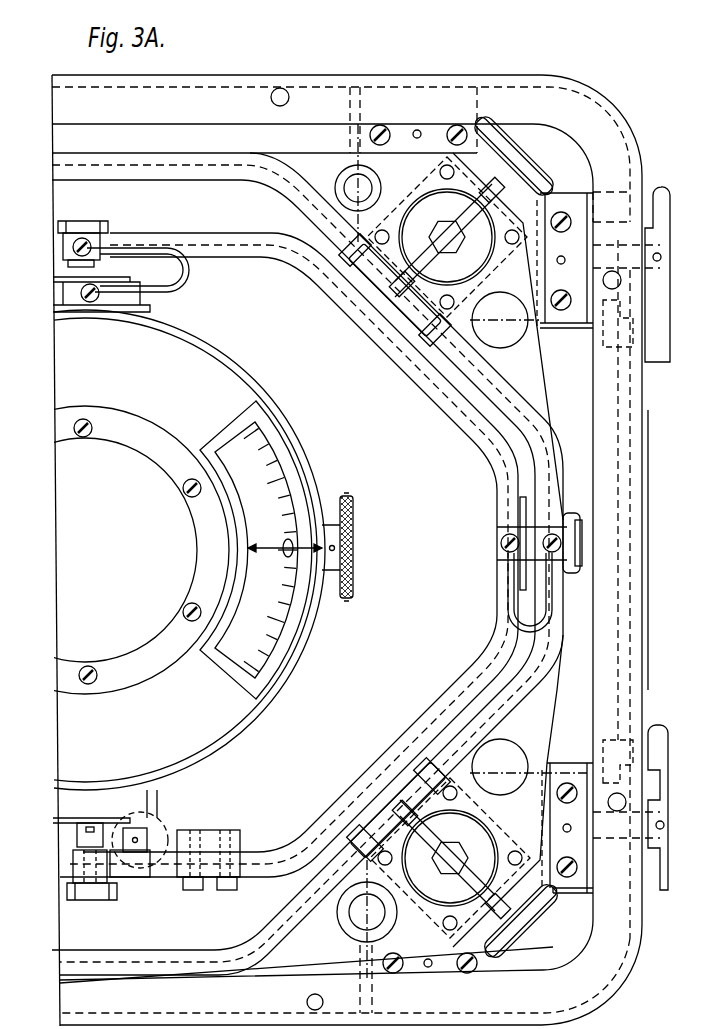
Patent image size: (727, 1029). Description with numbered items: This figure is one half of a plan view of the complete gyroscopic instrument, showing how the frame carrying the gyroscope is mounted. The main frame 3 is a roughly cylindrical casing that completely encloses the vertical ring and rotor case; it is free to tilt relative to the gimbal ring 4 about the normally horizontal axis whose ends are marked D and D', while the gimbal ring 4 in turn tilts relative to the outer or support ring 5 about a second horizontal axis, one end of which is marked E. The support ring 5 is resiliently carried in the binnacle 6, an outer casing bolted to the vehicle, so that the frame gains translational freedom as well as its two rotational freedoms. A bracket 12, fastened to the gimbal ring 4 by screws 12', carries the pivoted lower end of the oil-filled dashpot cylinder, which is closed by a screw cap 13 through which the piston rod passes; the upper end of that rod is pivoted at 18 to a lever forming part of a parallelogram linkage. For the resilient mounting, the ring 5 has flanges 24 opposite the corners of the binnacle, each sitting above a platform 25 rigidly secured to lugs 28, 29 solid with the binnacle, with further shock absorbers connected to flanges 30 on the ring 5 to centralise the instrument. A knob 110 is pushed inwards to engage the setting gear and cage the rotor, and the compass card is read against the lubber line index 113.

The main frame 3 is at (236, 712).
The gimbal ring 4 is at (383, 765).
The outer or support ring 5 is at (447, 745).
The outer casing or binnacle 6 is at (615, 690).
The bracket 12 is at (200, 881).
The screws 12' is at (218, 904).
The screw cap 13 is at (143, 860).
The pivot 18 is at (143, 827).
The flanges 24 is at (527, 727).
The platform 25 is at (520, 938).
The lug 28 is at (363, 995).
The lug 29 is at (582, 893).
The flange 30 is at (400, 790).
The knob 110 is at (346, 600).
The lubber line index 113 is at (298, 543).
The axis DD' end D is at (105, 861).
The axis DD' end D' is at (121, 254).
The axis EE' end E is at (638, 540).